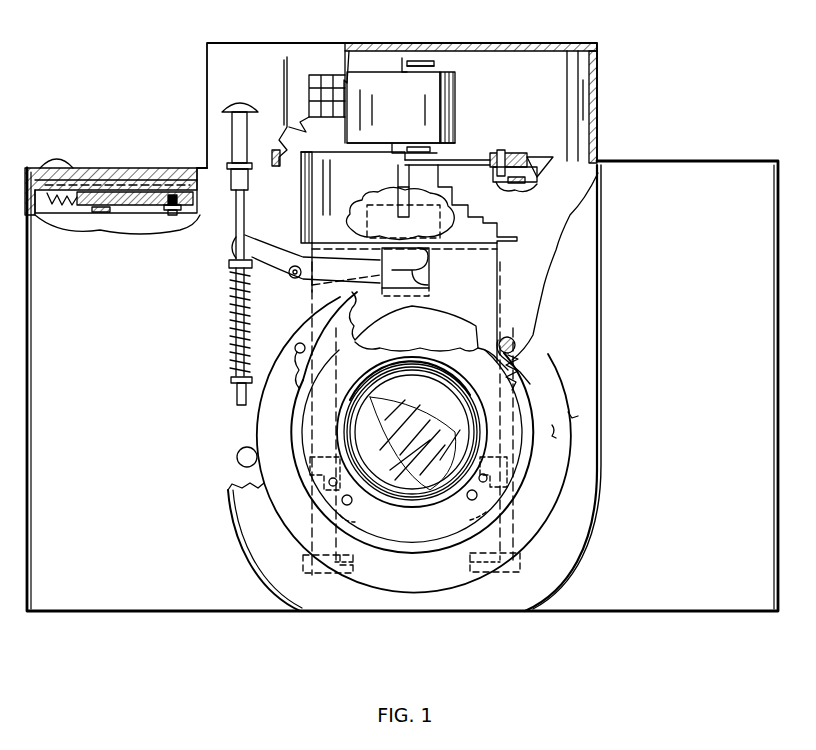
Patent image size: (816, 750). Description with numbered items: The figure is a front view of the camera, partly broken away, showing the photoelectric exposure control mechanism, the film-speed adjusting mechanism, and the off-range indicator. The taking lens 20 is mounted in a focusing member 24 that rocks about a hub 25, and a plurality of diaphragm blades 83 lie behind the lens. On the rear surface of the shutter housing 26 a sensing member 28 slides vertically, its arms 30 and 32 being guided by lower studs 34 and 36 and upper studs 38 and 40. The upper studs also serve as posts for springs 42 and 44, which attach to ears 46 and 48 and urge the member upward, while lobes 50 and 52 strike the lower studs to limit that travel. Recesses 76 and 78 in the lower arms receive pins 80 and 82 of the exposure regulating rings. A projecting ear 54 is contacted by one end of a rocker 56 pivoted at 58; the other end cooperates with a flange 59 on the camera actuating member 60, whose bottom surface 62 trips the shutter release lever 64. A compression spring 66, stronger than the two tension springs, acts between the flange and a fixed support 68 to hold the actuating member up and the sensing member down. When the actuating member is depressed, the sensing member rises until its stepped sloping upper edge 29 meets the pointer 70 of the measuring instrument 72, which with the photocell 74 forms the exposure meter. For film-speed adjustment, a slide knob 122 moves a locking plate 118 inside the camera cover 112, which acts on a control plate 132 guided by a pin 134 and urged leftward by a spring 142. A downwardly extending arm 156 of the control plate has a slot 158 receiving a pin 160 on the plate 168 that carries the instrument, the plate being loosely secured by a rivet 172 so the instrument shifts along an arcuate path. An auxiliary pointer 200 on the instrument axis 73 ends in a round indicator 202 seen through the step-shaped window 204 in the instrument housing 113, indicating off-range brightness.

The taking lens 20 is at (402, 432).
The focusing member 24 is at (553, 426).
The hub 25 is at (472, 404).
The shutter housing 26 is at (572, 416).
The sensing member 28 is at (500, 250).
The sloping upper edge 29 is at (503, 238).
The arm 30 is at (357, 523).
The arm 32 is at (470, 522).
The lower stud 34 is at (352, 504).
The lower stud 36 is at (468, 500).
The upper stud 38 is at (296, 345).
The upper stud 40 is at (512, 338).
The spring 42 is at (301, 372).
The spring 44 is at (522, 360).
The ear 46 is at (302, 556).
The ear 48 is at (510, 554).
The lobe 50 is at (352, 564).
The lobe 52 is at (472, 562).
The projecting ear 54 is at (430, 297).
The rocker 56 is at (262, 250).
The pivot 58 is at (298, 282).
The flange 59 is at (230, 262).
The camera actuating member 60 is at (232, 128).
The bottom surface 62 is at (240, 404).
The shutter release lever 64 is at (238, 462).
The compression spring 66 is at (234, 340).
The fixed support 68 is at (232, 380).
The pointer 70 is at (420, 146).
The measuring instrument 72 is at (373, 107).
The instrument axis 73 is at (398, 56).
The photocell 74 is at (324, 75).
The recess 76 is at (304, 472).
The recess 78 is at (520, 470).
The pin 80 is at (325, 444).
The pin 82 is at (496, 444).
The diaphragm blade 83 is at (444, 410).
The camera cover 112 is at (651, 515).
The instrument housing 113 is at (598, 72).
The locking plate 118 is at (110, 180).
The slide knob 122 is at (68, 162).
The control plate 132 is at (112, 214).
The pin 134 is at (172, 215).
The spring 142 is at (60, 208).
The downwardly extending arm 156 is at (378, 220).
The slot 158 is at (400, 190).
The pin 160 is at (420, 190).
The plate 168 is at (478, 160).
The rivet 172 is at (516, 152).
The auxiliary pointer 200 is at (420, 58).
The round indicator 202 is at (436, 63).
The window 204 is at (467, 44).